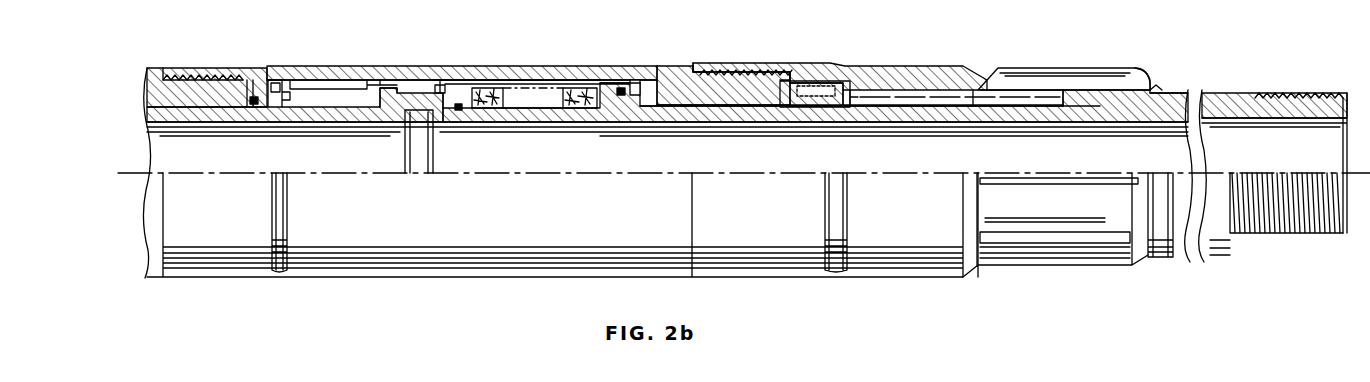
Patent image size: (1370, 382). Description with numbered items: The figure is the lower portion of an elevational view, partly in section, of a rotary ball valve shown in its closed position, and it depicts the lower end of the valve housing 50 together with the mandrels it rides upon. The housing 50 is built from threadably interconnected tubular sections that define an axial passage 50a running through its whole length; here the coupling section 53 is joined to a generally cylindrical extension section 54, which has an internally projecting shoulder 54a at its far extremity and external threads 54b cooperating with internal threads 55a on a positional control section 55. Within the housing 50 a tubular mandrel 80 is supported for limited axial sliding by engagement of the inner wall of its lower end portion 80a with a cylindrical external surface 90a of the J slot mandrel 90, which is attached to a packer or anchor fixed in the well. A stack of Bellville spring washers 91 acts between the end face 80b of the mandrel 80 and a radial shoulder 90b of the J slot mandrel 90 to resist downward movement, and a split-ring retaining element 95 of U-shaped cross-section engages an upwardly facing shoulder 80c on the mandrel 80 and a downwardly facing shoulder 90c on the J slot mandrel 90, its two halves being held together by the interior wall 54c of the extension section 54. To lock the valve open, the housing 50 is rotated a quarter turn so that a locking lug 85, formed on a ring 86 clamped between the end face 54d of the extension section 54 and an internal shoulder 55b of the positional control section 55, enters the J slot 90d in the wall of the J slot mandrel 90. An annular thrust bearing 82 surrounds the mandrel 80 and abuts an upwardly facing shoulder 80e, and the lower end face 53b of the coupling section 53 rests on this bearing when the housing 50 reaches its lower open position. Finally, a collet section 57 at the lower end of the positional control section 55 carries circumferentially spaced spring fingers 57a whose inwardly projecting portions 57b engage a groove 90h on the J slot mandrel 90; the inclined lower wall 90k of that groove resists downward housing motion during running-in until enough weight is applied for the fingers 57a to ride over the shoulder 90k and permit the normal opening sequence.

The valve housing 50 is at (613, 64).
The axial passage 50a is at (346, 88).
The coupling section 53 is at (156, 68).
The lower end face of coupling section 53b is at (268, 72).
The extension section 54 is at (330, 66).
The internally projecting shoulder 54a is at (660, 80).
The external threads 54b is at (720, 66).
The interior wall of housing extension 54c is at (382, 86).
The end face of extension housing 54d is at (786, 80).
The positional control section 55 is at (792, 63).
The internal threads 55a is at (745, 66).
The internal shoulder 55b is at (842, 84).
The collet section 57 is at (1022, 66).
The spring fingers 57a is at (1146, 80).
The inwardly projecting portion 57b is at (1154, 88).
The tubular mandrel 80 is at (310, 126).
The lower end portion of mandrel 80a is at (449, 111).
The end face of mandrel 80b is at (485, 92).
The upwardly facing shoulder 80c is at (438, 86).
The upwardly facing shoulder 80e is at (385, 95).
The annular thrust bearing 82 is at (278, 83).
The locking lug 85 is at (858, 93).
The ring 86 is at (820, 86).
The J slot mandrel 90 is at (840, 123).
The cylindrical external surface 90a is at (520, 108).
The radial shoulder 90b is at (590, 108).
The downwardly facing shoulder 90c is at (624, 96).
The J slot 90d is at (908, 95).
The groove 90h is at (1130, 82).
The inclined lower wall 90k is at (1170, 95).
The Bellville spring washers 91 is at (508, 92).
The split-ring retaining element 95 is at (546, 80).